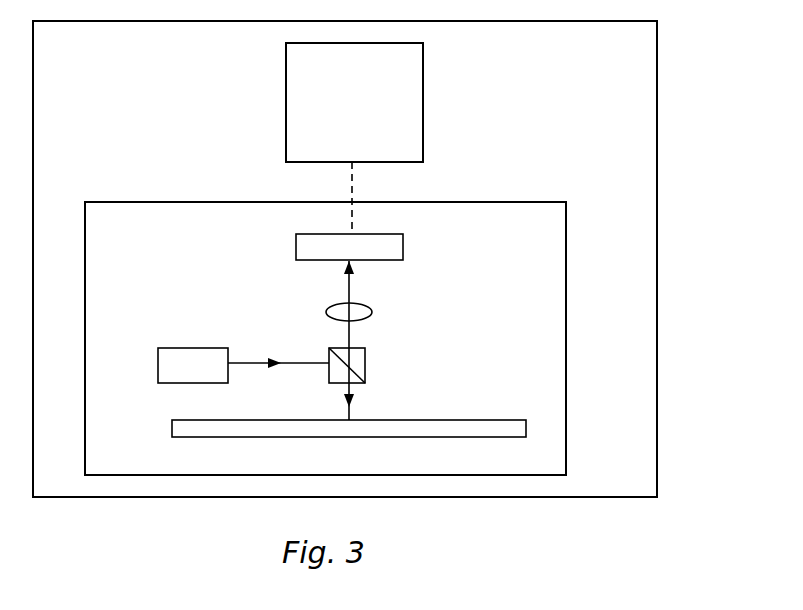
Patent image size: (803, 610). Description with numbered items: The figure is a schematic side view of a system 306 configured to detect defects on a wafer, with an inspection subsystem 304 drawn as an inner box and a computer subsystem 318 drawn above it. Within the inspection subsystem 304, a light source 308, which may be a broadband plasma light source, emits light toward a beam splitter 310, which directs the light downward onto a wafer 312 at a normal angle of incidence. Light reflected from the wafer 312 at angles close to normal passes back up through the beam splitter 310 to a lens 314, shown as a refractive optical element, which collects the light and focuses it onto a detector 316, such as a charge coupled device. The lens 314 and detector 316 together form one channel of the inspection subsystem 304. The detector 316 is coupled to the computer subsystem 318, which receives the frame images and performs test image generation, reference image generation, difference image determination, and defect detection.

The inspection subsystem 304 is at (566, 300).
The system 306 is at (657, 145).
The light source 308 is at (180, 348).
The beam splitter 310 is at (366, 369).
The wafer 312 is at (182, 420).
The lens 314 is at (370, 305).
The detector 316 is at (296, 250).
The computer subsystem 318 is at (335, 142).